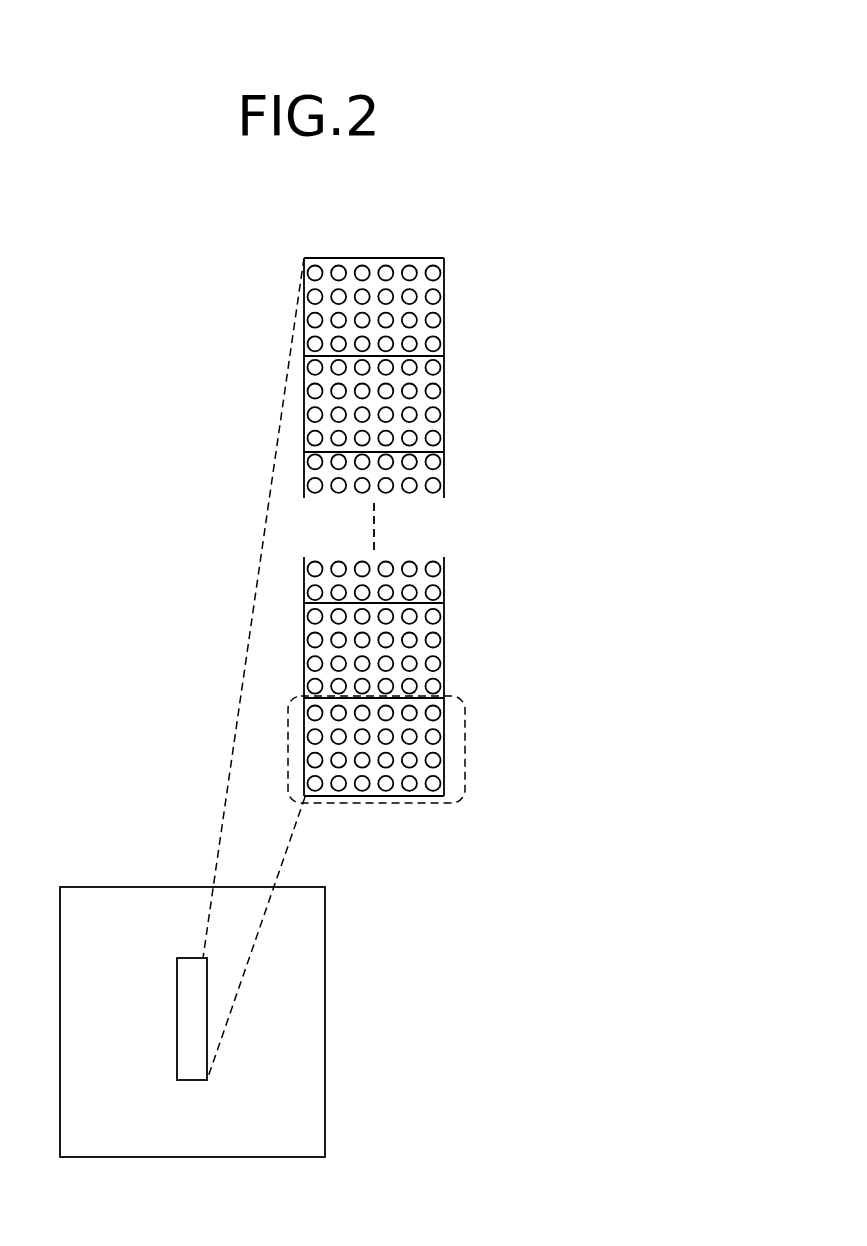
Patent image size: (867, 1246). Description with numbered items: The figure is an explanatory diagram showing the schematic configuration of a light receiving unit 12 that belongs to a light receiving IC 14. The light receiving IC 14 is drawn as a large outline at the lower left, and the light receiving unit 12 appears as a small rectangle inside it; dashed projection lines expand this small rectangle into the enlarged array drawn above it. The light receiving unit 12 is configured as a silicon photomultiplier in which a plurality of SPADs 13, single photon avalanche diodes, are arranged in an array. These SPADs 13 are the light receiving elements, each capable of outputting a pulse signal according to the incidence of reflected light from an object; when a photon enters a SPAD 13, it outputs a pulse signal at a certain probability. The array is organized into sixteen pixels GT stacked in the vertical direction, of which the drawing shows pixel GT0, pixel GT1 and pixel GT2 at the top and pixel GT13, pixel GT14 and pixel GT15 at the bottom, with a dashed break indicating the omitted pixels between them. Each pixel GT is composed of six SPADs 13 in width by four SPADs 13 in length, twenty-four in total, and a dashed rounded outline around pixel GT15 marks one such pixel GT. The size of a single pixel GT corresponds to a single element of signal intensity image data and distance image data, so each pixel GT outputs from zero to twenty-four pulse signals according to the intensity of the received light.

The light receiving unit 12 is at (450, 239).
The SPAD 13 is at (315, 791).
The light receiving IC 14 is at (137, 887).
The pixel GT0 is at (444, 306).
The pixel GT1 is at (444, 404).
The pixel GT2 is at (444, 477).
The pixel GT13 is at (444, 580).
The pixel GT14 is at (444, 651).
The pixel GT15 is at (444, 748).
The pixel GT is at (418, 804).